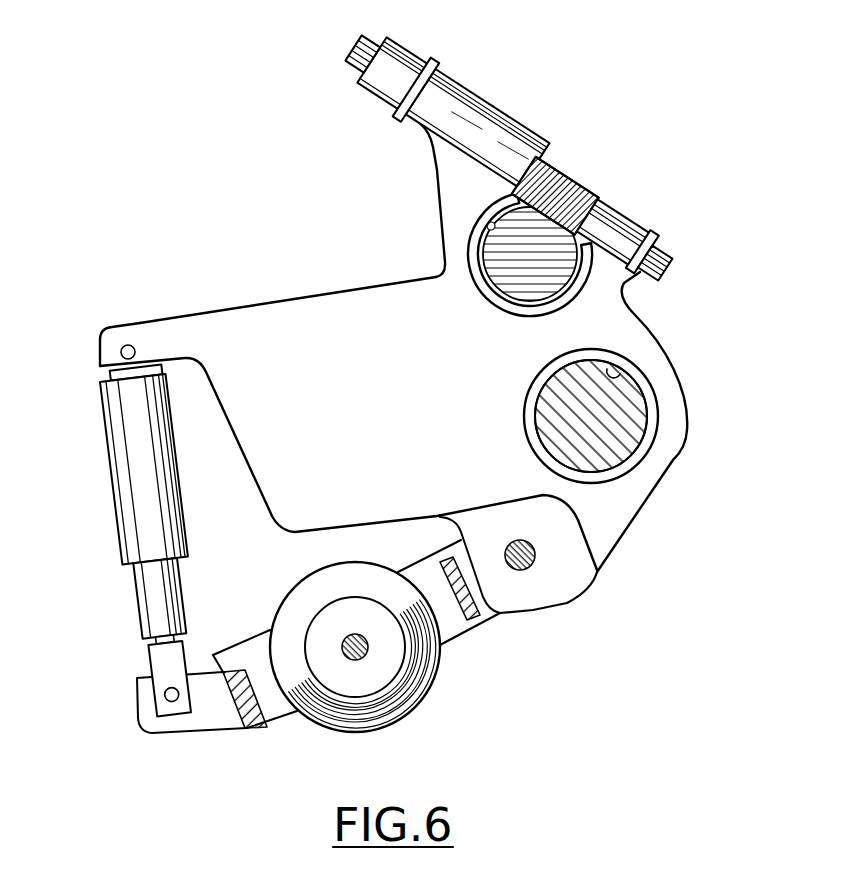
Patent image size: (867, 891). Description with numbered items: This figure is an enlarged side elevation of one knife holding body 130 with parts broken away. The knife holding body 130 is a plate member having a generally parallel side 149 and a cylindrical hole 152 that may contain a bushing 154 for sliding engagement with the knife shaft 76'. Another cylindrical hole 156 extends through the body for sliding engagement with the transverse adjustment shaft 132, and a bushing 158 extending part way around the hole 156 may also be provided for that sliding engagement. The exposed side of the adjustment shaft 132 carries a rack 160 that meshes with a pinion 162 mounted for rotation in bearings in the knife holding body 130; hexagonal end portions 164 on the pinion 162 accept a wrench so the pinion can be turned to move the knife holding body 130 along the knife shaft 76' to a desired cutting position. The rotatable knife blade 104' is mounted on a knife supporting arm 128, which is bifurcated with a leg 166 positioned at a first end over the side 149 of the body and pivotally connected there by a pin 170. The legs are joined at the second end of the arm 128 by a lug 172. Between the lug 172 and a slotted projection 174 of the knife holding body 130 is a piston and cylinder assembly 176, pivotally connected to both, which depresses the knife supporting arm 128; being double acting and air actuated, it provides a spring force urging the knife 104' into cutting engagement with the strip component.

The knife shaft 76' is at (639, 416).
The rotatable knife blade 104' is at (384, 647).
The knife supporting arm 128 is at (480, 622).
The knife holding body 130 is at (622, 515).
The transverse adjustment shaft 132 is at (478, 277).
The side of knife holding body 149 is at (253, 314).
The cylindrical hole 152 is at (627, 373).
The bushing 154 is at (643, 448).
The cylindrical hole 156 is at (473, 223).
The bushing 158 is at (478, 248).
The rack 160 is at (580, 190).
The pinion 162 is at (560, 187).
The hexagonal end portion 164 is at (356, 64).
The leg 166 is at (283, 715).
The pin 170 is at (537, 561).
The lug 172 is at (170, 724).
The slotted projection 174 is at (122, 328).
The piston and cylinder assembly 176 is at (133, 483).